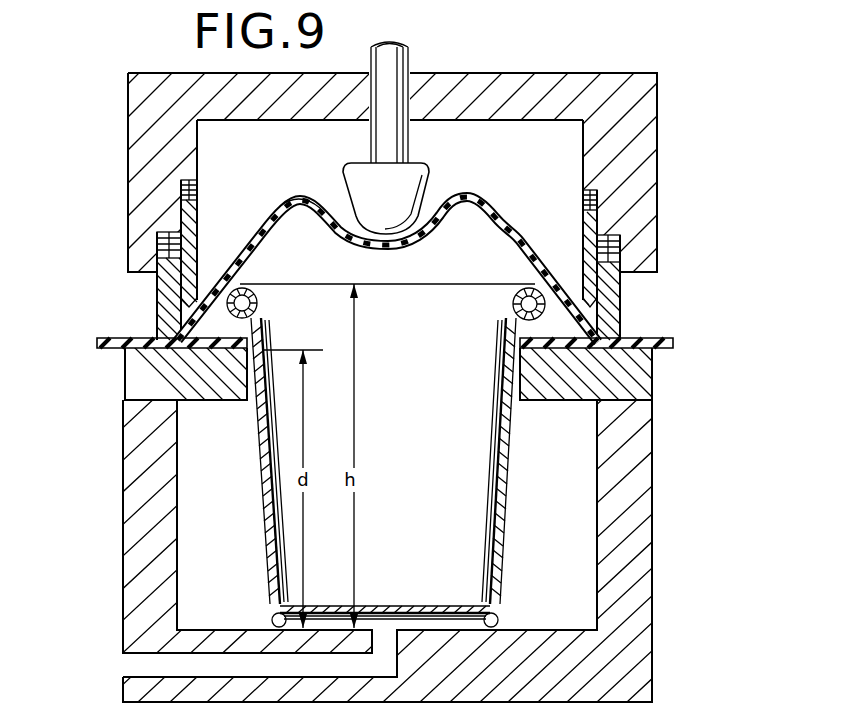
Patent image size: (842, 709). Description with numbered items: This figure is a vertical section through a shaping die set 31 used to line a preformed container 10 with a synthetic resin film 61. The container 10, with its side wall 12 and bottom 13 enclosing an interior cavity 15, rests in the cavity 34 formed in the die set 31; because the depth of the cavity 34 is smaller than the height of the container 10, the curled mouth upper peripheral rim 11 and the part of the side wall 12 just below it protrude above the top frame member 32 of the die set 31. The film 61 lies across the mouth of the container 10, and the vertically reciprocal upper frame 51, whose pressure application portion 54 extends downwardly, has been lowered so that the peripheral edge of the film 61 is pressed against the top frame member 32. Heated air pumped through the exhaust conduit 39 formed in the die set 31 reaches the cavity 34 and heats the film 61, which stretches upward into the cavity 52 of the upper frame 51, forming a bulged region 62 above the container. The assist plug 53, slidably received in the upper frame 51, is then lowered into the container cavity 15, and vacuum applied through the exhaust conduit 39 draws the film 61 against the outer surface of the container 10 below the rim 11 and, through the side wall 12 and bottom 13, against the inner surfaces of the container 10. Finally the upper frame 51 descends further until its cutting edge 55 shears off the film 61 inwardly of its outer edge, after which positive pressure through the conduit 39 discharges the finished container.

The preformed container 10 is at (381, 437).
The mouth upper peripheral rim 11 is at (514, 306).
The side wall 12 is at (265, 482).
The bottom 13 is at (429, 609).
The cavity 15 is at (398, 532).
The shaping die set 31 is at (661, 439).
The top frame member 32 is at (642, 377).
The cavity 34 is at (536, 534).
The exhaust conduit 39 is at (130, 661).
The upper frame 51 is at (637, 130).
The cavity 52 is at (480, 245).
The assist plug 53 is at (411, 178).
The pressure application portion 54 is at (613, 318).
The cutting edge 55 is at (588, 282).
The synthetic resin film 61 is at (673, 346).
The bulge of diaphragm 62 is at (299, 194).